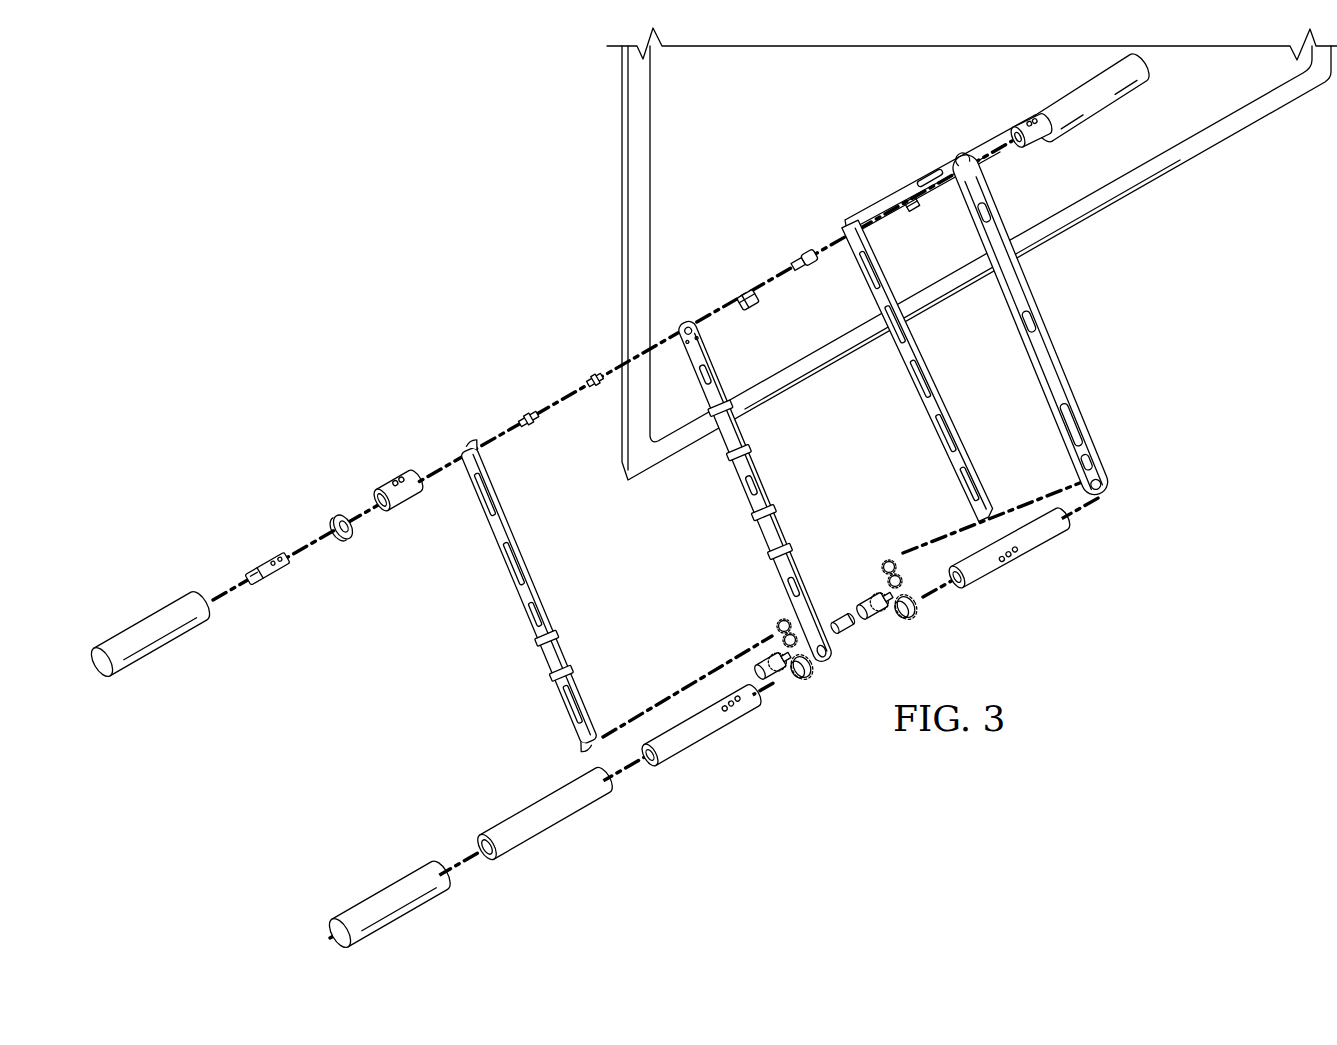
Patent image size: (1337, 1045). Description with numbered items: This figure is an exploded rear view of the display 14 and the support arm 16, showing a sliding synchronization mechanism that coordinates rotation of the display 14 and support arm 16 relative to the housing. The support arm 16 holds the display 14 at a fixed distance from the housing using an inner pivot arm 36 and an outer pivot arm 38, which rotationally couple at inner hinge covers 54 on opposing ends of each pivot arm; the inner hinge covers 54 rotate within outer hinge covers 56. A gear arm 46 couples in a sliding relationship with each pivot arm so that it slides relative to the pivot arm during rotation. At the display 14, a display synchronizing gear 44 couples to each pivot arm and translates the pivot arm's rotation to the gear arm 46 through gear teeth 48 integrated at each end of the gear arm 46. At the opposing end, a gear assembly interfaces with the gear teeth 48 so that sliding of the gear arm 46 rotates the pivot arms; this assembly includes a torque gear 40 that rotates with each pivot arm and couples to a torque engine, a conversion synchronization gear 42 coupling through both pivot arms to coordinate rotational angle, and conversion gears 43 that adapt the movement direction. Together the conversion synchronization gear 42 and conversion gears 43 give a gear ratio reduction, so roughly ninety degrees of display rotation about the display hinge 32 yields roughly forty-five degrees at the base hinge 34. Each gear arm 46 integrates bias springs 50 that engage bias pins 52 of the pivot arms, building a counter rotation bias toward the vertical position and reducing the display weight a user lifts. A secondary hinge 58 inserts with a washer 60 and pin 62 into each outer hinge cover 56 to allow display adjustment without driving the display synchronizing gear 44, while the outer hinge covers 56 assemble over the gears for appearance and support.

The display 14 is at (622, 150).
The support arm 16 is at (452, 629).
The display hinge 32 is at (372, 432).
The base hinge 34 is at (762, 737).
The inner pivot arm 36 is at (792, 548).
The outer pivot arm 38 is at (1078, 395).
The torque gear 40 is at (807, 672).
The conversion synchronization gear 42 is at (785, 670).
The conversion gears 43 is at (782, 623).
The display synchronizing gear 44 is at (530, 417).
The gear arm 46 is at (538, 590).
The gear teeth 48 is at (465, 446).
The bias springs 50 is at (545, 638).
The bias pins 52 is at (737, 433).
The inner hinge covers 54 is at (697, 743).
The outer hinge covers 56 is at (157, 653).
The secondary hinge 58 is at (413, 503).
The washer 60 is at (347, 538).
The pin 62 is at (277, 574).